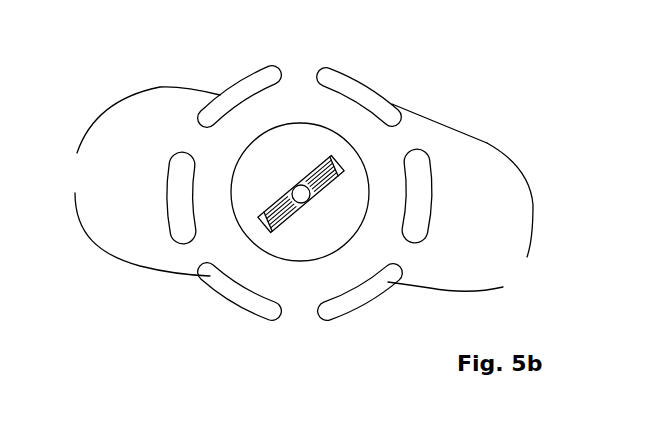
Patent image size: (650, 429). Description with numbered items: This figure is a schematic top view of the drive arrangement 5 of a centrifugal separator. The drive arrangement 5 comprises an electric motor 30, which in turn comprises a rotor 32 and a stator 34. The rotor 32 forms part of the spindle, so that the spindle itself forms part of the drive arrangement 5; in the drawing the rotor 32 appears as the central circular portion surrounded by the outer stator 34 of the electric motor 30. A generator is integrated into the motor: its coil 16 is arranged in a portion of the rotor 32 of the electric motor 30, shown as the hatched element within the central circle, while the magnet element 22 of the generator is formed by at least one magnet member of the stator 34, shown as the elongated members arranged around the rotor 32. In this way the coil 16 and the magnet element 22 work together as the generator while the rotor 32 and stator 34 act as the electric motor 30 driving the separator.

The drive arrangement 5 is at (315, 152).
The electric motor 30 is at (457, 102).
The stator 34 is at (402, 70).
The magnet element 22 is at (178, 195).
The rotor 32 is at (290, 172).
The coil 16 is at (331, 193).